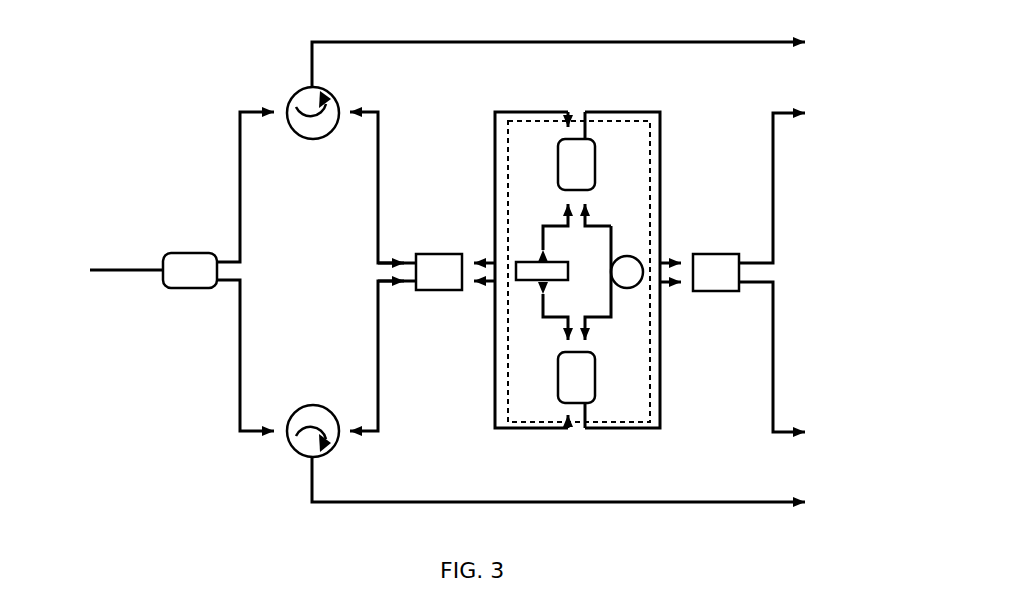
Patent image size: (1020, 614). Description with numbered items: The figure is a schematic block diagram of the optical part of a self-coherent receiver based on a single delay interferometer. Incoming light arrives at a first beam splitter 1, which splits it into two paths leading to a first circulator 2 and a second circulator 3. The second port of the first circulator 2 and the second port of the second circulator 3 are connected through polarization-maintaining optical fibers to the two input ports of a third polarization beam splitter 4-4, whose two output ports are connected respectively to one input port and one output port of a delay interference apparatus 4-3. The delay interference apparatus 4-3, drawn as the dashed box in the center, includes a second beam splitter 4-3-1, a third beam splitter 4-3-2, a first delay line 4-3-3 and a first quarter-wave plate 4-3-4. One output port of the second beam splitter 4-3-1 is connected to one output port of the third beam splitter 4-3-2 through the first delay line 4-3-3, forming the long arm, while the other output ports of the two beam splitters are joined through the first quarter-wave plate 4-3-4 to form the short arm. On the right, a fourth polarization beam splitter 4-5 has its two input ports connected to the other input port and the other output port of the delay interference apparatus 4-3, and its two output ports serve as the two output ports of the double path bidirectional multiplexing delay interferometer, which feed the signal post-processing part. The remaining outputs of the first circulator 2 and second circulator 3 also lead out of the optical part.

The first beam splitter 1 is at (153, 295).
The first circulator 2 is at (287, 79).
The second circulator 3 is at (286, 448).
The delay interference apparatus 4-3 is at (574, 267).
The second beam splitter 4-3-1 is at (510, 127).
The third beam splitter 4-3-2 is at (506, 411).
The first delay line 4-3-3 is at (682, 315).
The first quarter-wave plate 4-3-4 is at (481, 230).
The third polarization beam splitter 4-4 is at (384, 297).
The fourth polarization beam splitter 4-5 is at (763, 297).